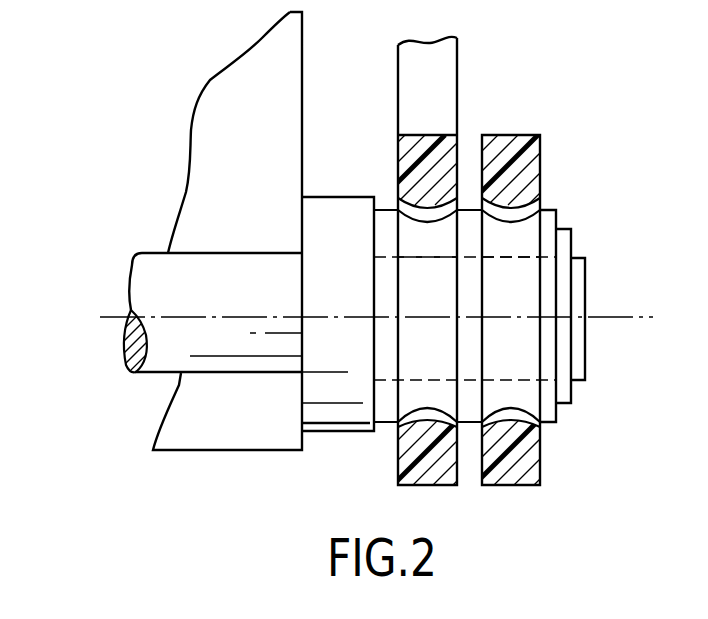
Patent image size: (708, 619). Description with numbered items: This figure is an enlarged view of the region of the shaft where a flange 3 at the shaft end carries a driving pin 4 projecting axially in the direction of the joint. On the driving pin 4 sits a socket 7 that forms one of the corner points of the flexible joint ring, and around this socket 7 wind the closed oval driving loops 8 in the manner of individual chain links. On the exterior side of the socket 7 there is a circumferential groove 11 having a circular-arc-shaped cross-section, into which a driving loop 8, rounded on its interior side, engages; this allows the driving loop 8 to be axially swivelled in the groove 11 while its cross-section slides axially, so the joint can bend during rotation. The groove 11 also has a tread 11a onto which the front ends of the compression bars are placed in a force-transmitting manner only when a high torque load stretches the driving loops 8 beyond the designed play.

The flange 3 is at (203, 144).
The driving pin 4 is at (146, 287).
The socket 7 is at (553, 412).
The driving loop 8 is at (503, 148).
The circumferential groove 11 is at (444, 307).
The tread 11a is at (427, 366).